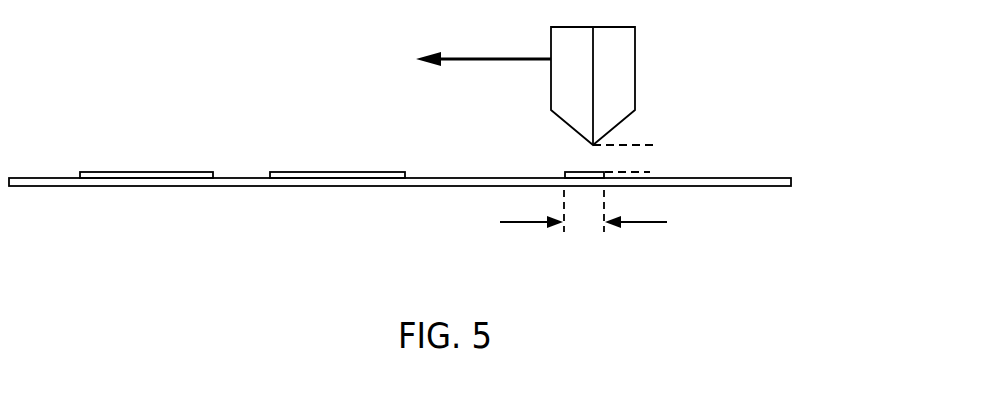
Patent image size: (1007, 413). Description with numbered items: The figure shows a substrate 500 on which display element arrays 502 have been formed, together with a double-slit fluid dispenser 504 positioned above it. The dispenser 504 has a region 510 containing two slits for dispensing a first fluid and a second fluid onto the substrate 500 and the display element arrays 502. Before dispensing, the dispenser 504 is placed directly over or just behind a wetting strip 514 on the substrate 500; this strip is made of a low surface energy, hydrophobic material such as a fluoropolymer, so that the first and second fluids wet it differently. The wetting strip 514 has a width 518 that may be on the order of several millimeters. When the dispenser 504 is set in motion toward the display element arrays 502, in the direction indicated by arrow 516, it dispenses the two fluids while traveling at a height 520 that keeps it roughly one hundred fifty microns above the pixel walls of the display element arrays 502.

The substrate 500 is at (710, 187).
The display element arrays 502 is at (160, 172).
The double-slit fluid dispenser 504 is at (635, 60).
The region 510 is at (592, 150).
The wetting strip 514 is at (565, 172).
The arrow 516 is at (471, 58).
The width 518 is at (510, 222).
The height 520 is at (650, 159).